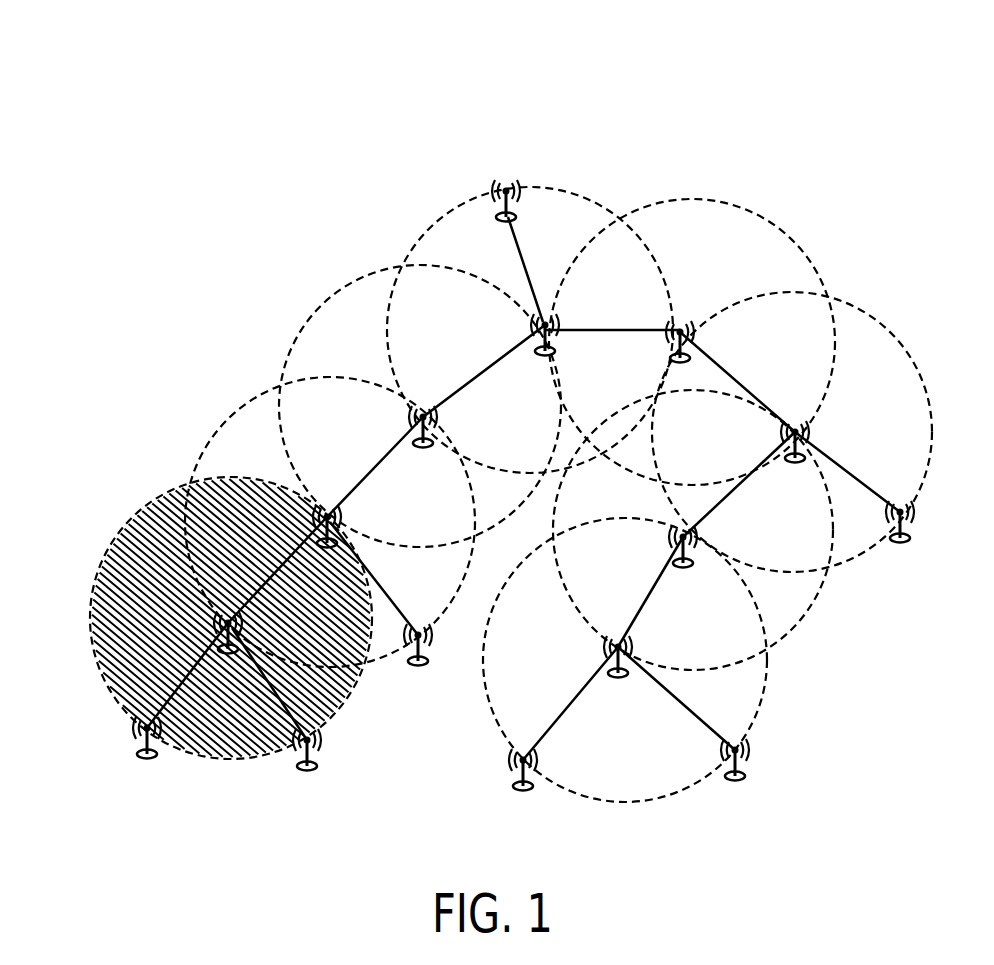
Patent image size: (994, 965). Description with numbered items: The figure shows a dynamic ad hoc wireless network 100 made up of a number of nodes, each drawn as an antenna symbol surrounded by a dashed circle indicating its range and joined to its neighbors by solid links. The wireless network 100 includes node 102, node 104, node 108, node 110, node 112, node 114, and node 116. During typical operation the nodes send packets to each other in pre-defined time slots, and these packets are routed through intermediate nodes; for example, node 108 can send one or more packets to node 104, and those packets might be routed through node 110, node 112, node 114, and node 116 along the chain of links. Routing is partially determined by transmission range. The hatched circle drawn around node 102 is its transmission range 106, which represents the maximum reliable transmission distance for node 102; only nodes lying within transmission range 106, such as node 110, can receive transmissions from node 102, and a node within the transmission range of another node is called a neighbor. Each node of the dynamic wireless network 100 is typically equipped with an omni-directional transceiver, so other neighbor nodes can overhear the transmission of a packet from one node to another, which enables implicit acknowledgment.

The dynamic ad hoc wireless network 100 is at (521, 138).
The node 102 is at (230, 652).
The node 104 is at (797, 425).
The transmission range 106 is at (148, 503).
The node 108 is at (418, 668).
The node 110 is at (336, 513).
The node 112 is at (408, 413).
The node 114 is at (541, 320).
The node 116 is at (668, 328).